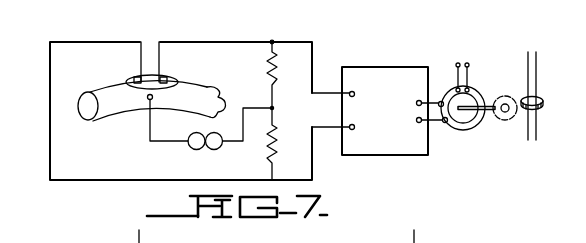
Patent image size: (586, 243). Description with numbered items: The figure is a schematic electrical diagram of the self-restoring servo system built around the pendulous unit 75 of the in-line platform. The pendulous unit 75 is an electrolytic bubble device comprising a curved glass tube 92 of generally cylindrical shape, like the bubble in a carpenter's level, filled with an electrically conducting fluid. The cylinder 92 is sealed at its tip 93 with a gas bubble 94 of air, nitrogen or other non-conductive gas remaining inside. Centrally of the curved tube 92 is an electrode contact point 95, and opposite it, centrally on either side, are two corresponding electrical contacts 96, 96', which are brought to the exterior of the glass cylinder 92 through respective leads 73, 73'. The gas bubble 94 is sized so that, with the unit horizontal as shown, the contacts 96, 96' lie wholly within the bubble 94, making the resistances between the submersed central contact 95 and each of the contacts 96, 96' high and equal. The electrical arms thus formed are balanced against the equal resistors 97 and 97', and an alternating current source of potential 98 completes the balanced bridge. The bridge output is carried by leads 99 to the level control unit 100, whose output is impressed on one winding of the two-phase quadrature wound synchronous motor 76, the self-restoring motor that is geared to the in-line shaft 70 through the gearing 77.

The in-line shaft 70 is at (538, 78).
The lead 73 is at (140, 49).
The lead 73' is at (168, 48).
The pendulous unit 75 is at (128, 117).
The two-phase quadrature wound synchronous motor 76 is at (463, 130).
The gearing 77 is at (509, 124).
The curved glass tube 92 is at (83, 113).
The tip 93 is at (221, 109).
The gas bubble 94 is at (140, 90).
The electrode contact point 95 is at (155, 97).
The electrical contact 96 is at (123, 69).
The electrical contact 96' is at (186, 68).
The resistor 97 is at (285, 74).
The resistor 97' is at (285, 144).
The source of potential 98 is at (200, 150).
The leads 99 is at (329, 110).
The level control unit 100 is at (388, 67).